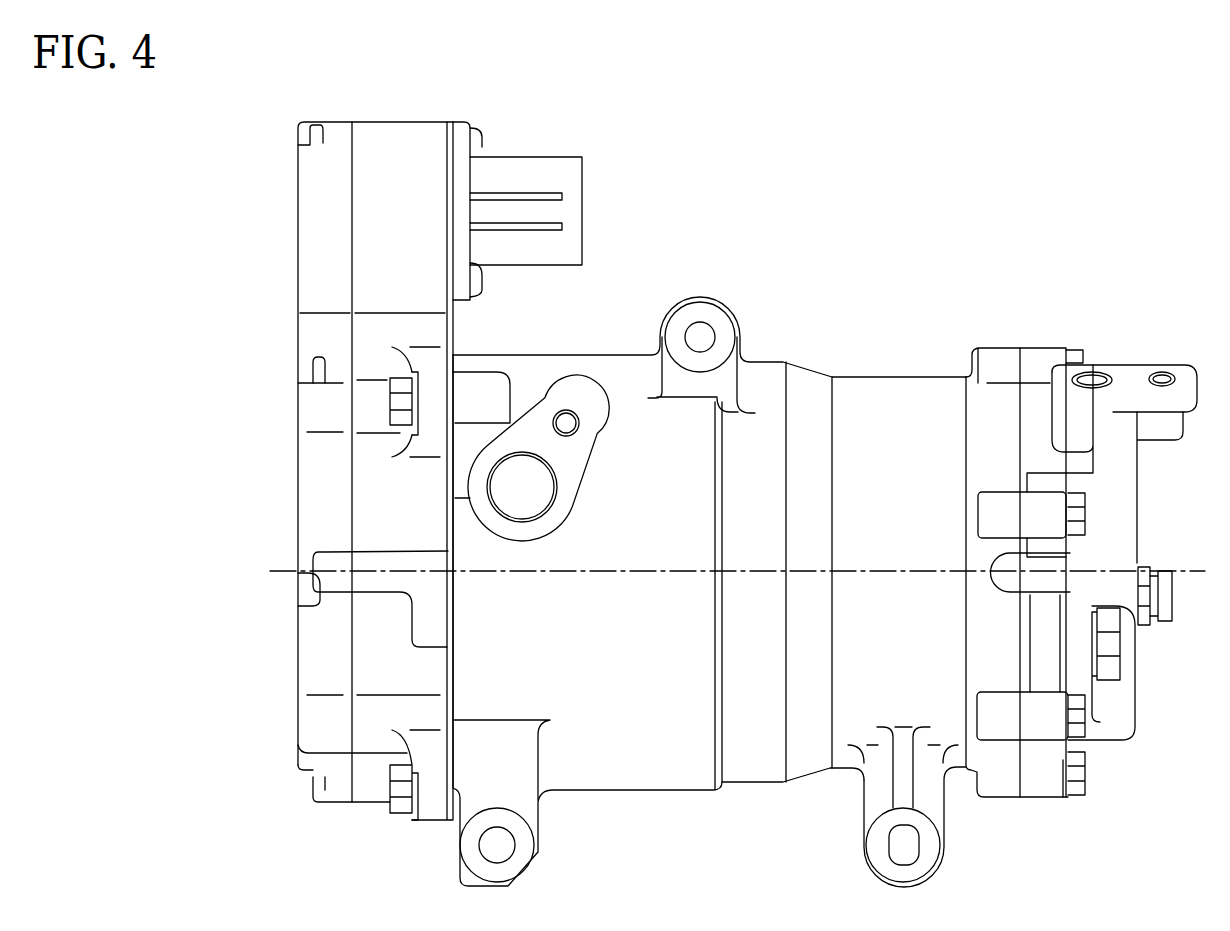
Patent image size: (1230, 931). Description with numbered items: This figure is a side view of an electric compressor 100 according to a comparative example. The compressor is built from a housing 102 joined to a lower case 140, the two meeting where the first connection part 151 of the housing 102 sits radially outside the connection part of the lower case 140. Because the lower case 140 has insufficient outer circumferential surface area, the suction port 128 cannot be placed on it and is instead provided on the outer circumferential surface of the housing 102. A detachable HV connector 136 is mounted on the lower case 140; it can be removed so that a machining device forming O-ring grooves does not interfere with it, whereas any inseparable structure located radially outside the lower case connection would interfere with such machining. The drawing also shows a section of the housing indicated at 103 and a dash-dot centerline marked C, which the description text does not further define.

The electric compressor 100 is at (1060, 180).
The housing 102 is at (871, 338).
The center housing portion 103 is at (808, 384).
The suction port 128 is at (572, 395).
The HV connector 136 is at (519, 175).
The lower case 140 is at (376, 135).
The first connection part 151 is at (480, 356).
The axis C is at (1190, 574).